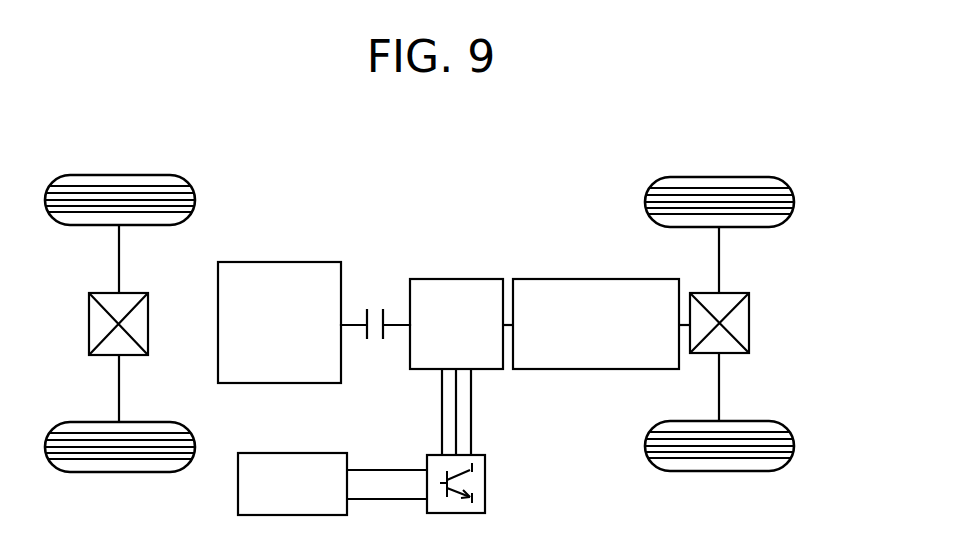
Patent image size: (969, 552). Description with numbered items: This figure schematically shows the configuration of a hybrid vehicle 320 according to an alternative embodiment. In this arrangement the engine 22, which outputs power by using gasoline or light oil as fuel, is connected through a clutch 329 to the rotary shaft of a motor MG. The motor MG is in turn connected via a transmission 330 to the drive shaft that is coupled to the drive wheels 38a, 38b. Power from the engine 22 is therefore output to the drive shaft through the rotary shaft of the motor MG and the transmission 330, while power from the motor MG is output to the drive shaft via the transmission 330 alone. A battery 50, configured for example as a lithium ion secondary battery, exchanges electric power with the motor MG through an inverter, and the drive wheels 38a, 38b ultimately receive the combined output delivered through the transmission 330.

The hybrid vehicle 320 is at (531, 132).
The engine 22 is at (279, 261).
The clutch 329 is at (375, 308).
The motor MG is at (457, 278).
The transmission 330 is at (573, 278).
The battery 50 is at (294, 452).
The drive wheel 38a is at (719, 176).
The drive wheel 38b is at (720, 471).